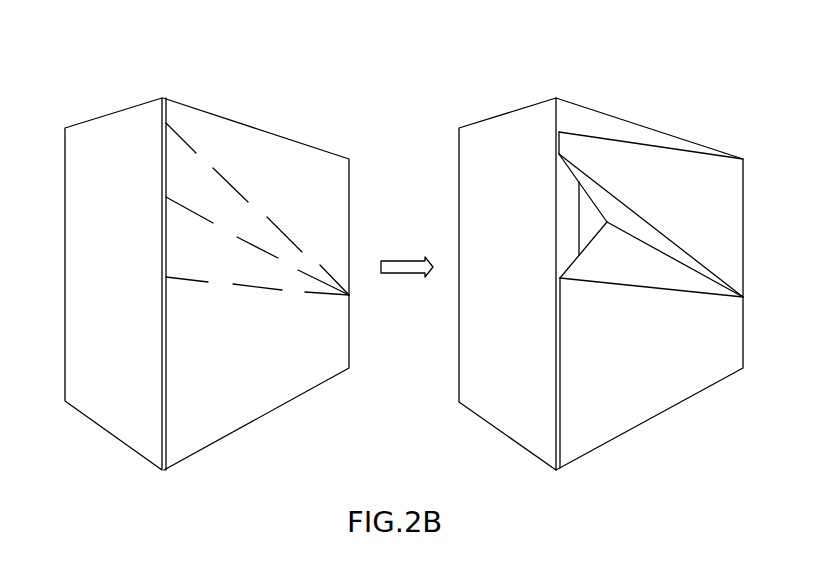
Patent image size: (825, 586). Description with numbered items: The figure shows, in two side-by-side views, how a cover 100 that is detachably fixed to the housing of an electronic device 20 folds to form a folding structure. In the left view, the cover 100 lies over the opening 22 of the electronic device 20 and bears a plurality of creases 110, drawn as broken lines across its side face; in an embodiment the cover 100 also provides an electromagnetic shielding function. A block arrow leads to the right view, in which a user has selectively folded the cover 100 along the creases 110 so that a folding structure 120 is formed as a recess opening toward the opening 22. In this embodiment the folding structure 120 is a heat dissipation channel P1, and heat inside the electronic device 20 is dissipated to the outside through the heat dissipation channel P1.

The electronic device 20 is at (80, 96).
The cover 100 is at (343, 196).
The creases 110 is at (268, 288).
The folding structure 120 is at (712, 260).
The opening 22 is at (590, 213).
The heat dissipation channel P1 is at (567, 216).